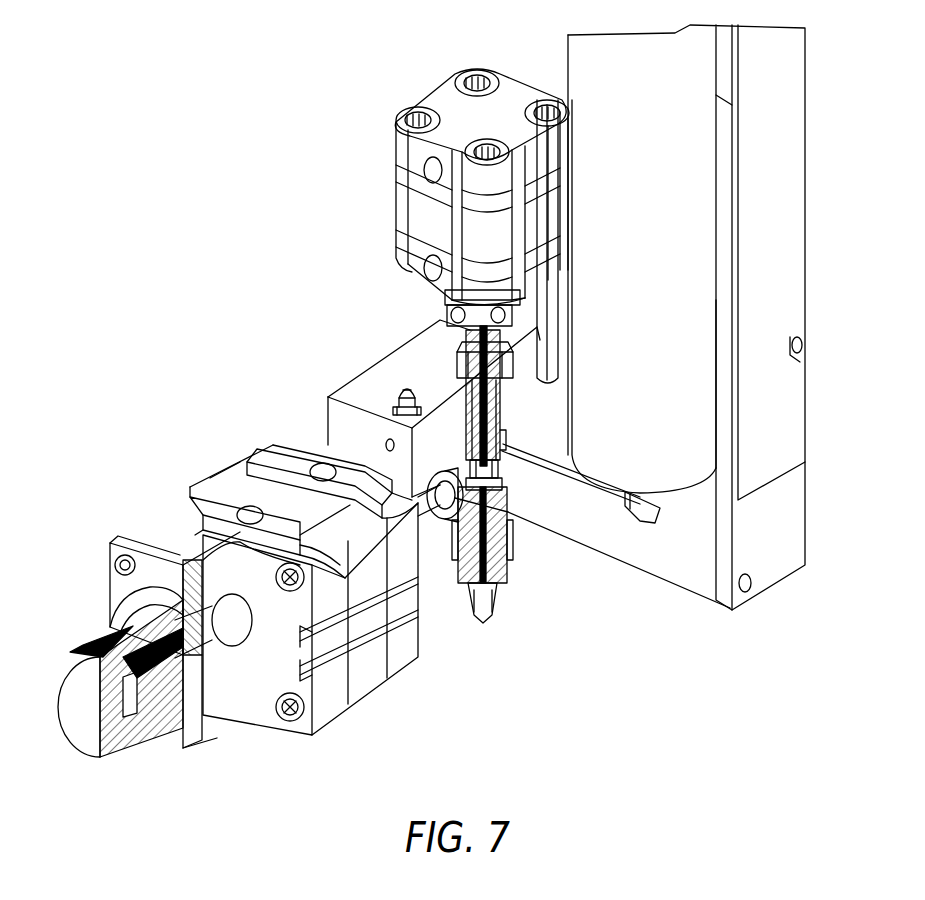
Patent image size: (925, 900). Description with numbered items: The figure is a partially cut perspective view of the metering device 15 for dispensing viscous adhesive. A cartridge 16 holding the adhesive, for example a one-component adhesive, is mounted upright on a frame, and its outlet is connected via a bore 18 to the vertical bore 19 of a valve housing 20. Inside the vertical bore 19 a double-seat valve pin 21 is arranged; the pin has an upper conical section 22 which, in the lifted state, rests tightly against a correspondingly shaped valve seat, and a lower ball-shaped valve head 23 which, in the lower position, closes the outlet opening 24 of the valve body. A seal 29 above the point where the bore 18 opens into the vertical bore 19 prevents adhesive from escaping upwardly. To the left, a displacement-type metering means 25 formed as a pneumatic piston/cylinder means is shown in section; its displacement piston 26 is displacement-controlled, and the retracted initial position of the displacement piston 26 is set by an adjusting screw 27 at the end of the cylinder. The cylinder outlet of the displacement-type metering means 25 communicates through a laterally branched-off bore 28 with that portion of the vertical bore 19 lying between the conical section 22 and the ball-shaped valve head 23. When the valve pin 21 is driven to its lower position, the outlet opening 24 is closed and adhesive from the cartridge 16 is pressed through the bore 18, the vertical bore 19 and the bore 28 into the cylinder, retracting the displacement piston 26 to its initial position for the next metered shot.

The metering device 15 is at (285, 233).
The cartridge 16 is at (660, 435).
The bore 18 is at (606, 490).
The vertical bore 19 is at (504, 440).
The valve housing 20 is at (505, 425).
The double-seat valve pin 21 is at (503, 392).
The upper conical section 22 is at (500, 470).
The ball-shaped valve head 23 is at (502, 490).
The outlet opening 24 is at (510, 570).
The displacement-type metering means 25 is at (222, 472).
The displacement piston 26 is at (440, 528).
The adjusting screw 27 is at (168, 735).
The bore 28 is at (470, 468).
The seal 29 is at (472, 430).